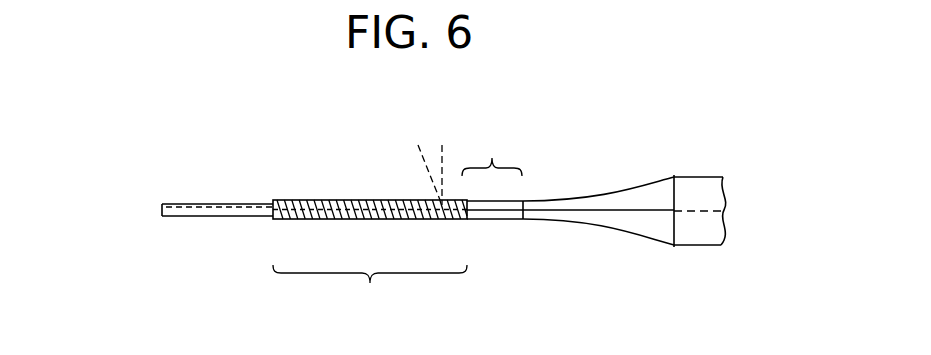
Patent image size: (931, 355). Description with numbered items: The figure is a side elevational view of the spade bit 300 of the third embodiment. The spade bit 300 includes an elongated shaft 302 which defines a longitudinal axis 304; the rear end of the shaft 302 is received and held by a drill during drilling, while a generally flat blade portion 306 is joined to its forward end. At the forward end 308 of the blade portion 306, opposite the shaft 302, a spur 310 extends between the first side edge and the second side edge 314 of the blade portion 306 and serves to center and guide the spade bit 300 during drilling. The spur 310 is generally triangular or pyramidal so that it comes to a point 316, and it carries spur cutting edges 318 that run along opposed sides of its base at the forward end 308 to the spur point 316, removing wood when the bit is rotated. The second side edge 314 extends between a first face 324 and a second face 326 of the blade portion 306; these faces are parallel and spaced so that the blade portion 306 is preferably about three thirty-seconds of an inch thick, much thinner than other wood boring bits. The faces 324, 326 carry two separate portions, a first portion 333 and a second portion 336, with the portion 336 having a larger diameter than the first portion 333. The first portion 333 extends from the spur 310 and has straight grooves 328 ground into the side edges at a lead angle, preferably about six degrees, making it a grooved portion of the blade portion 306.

The spade bit 300 is at (549, 139).
The elongated shaft 302 is at (690, 182).
The longitudinal axis 304 is at (690, 211).
The blade portion 306 is at (498, 198).
The forward end of the blade portion 308 is at (275, 204).
The spur 310 is at (218, 226).
The second side edge 314 is at (318, 218).
The spur point 316 is at (160, 208).
The spur cutting edges 318 is at (185, 210).
The first face 324 is at (335, 200).
The second face 326 is at (350, 220).
The grooves 328 is at (422, 215).
The first portion 333 is at (370, 292).
The second portion 336 is at (492, 150).